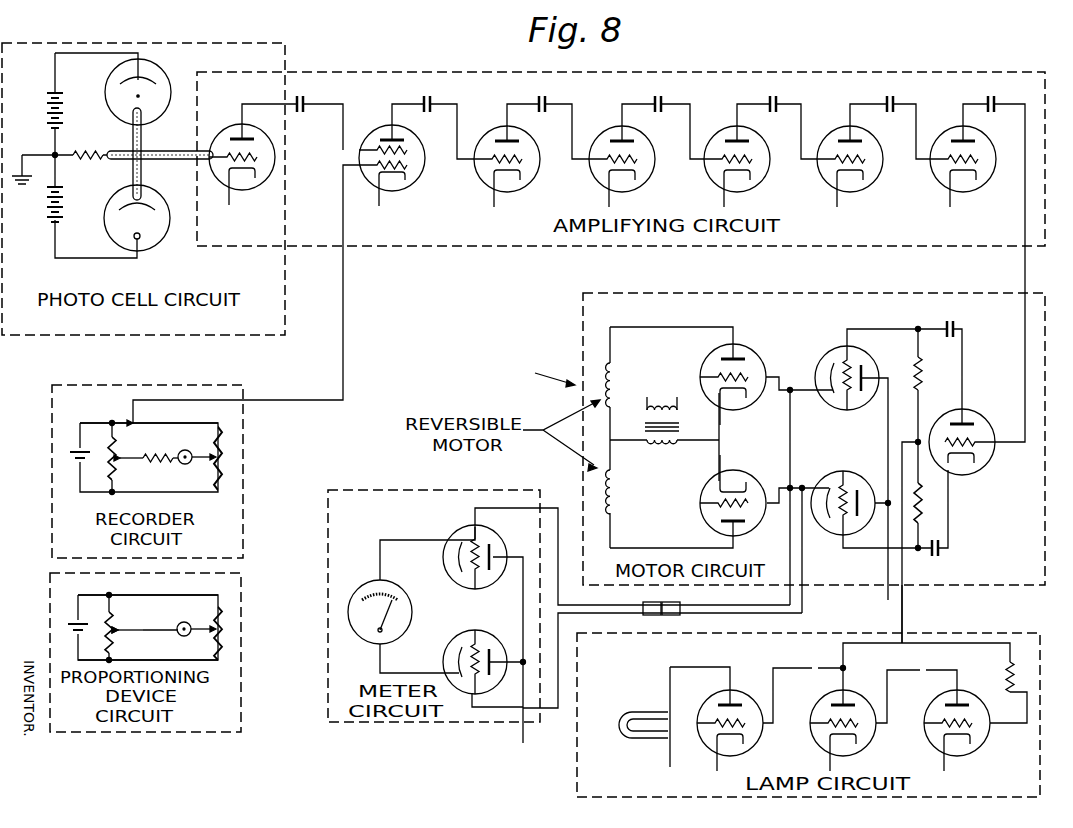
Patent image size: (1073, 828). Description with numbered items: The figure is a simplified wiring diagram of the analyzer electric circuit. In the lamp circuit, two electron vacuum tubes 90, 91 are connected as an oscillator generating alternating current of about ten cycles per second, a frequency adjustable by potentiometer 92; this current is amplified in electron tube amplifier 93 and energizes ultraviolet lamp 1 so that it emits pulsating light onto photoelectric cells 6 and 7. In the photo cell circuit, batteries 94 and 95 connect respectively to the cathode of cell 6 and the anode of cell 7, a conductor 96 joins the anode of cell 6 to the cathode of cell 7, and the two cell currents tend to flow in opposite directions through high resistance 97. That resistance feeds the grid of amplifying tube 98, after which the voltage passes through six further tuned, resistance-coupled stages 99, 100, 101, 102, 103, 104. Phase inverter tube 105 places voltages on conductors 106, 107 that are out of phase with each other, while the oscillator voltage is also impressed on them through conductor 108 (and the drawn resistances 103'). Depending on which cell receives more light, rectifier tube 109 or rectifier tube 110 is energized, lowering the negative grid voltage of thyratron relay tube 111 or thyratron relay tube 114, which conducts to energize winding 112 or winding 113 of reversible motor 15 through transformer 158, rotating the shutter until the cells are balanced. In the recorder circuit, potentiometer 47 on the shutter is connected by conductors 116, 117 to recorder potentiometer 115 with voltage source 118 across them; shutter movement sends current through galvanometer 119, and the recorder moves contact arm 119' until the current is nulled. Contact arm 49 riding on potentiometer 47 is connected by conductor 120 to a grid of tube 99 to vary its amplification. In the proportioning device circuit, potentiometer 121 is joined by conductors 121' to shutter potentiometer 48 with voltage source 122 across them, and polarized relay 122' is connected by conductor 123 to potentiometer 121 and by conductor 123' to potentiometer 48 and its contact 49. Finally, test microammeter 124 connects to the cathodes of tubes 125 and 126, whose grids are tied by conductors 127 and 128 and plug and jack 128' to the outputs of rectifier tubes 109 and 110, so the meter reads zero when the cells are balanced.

The ultraviolet lamp 1 is at (630, 709).
The photoelectric cell 6 is at (158, 79).
The photoelectric cell 7 is at (157, 243).
The motor 15 is at (544, 372).
The potentiometer 47 is at (111, 440).
The potentiometer 48 is at (106, 612).
The contact arm 49 is at (122, 462).
The electron vacuum tube 90 is at (980, 750).
The electron vacuum tube 91 is at (870, 743).
The potentiometer 92 is at (1015, 680).
The electron tube amplifier 93 is at (758, 743).
The battery 94 is at (47, 100).
The battery 95 is at (48, 212).
The conductor 96 is at (142, 170).
The high resistance 97 is at (88, 140).
The electronic amplifying tube 98 is at (240, 190).
The amplifying tube 99 is at (382, 128).
The amplification stage 100 is at (494, 130).
The amplification stage 101 is at (610, 130).
The amplification stage 102 is at (724, 130).
The amplification stage 103 is at (849, 147).
The resistor 103' is at (936, 440).
The amplification stage 104 is at (952, 130).
The phase inverter tube 105 is at (967, 410).
The conductor 106 is at (963, 366).
The conductor 107 is at (951, 510).
The conductor 108 is at (905, 605).
The rectifier tube 109 is at (830, 350).
The rectifier tube 110 is at (851, 473).
The thyratron relay tube 111 is at (756, 355).
The motor winding 112 is at (614, 378).
The motor winding 113 is at (614, 500).
The thyratron relay tube 114 is at (742, 530).
The recorder potentiometer 115 is at (222, 452).
The conductor 116 is at (165, 423).
The conductor 117 is at (202, 490).
The source of voltage 118 is at (72, 452).
The galvanometer 119 is at (176, 445).
The contact arm 119' is at (197, 472).
The conductor 120 is at (344, 380).
The potentiometer 121 is at (250, 633).
The conductors 121' is at (181, 627).
The source of voltage 122 is at (52, 618).
The polarized relay 122' is at (169, 618).
The conductor 123 is at (194, 642).
The conductor 123' is at (134, 616).
The test microammeter 124 is at (360, 580).
The vacuum electron tube 125 is at (458, 533).
The vacuum electron tube 126 is at (488, 636).
The conductor 127 is at (553, 505).
The conductor 128 is at (662, 681).
The plug and jack 128' is at (636, 601).
The transformer 158 is at (660, 405).